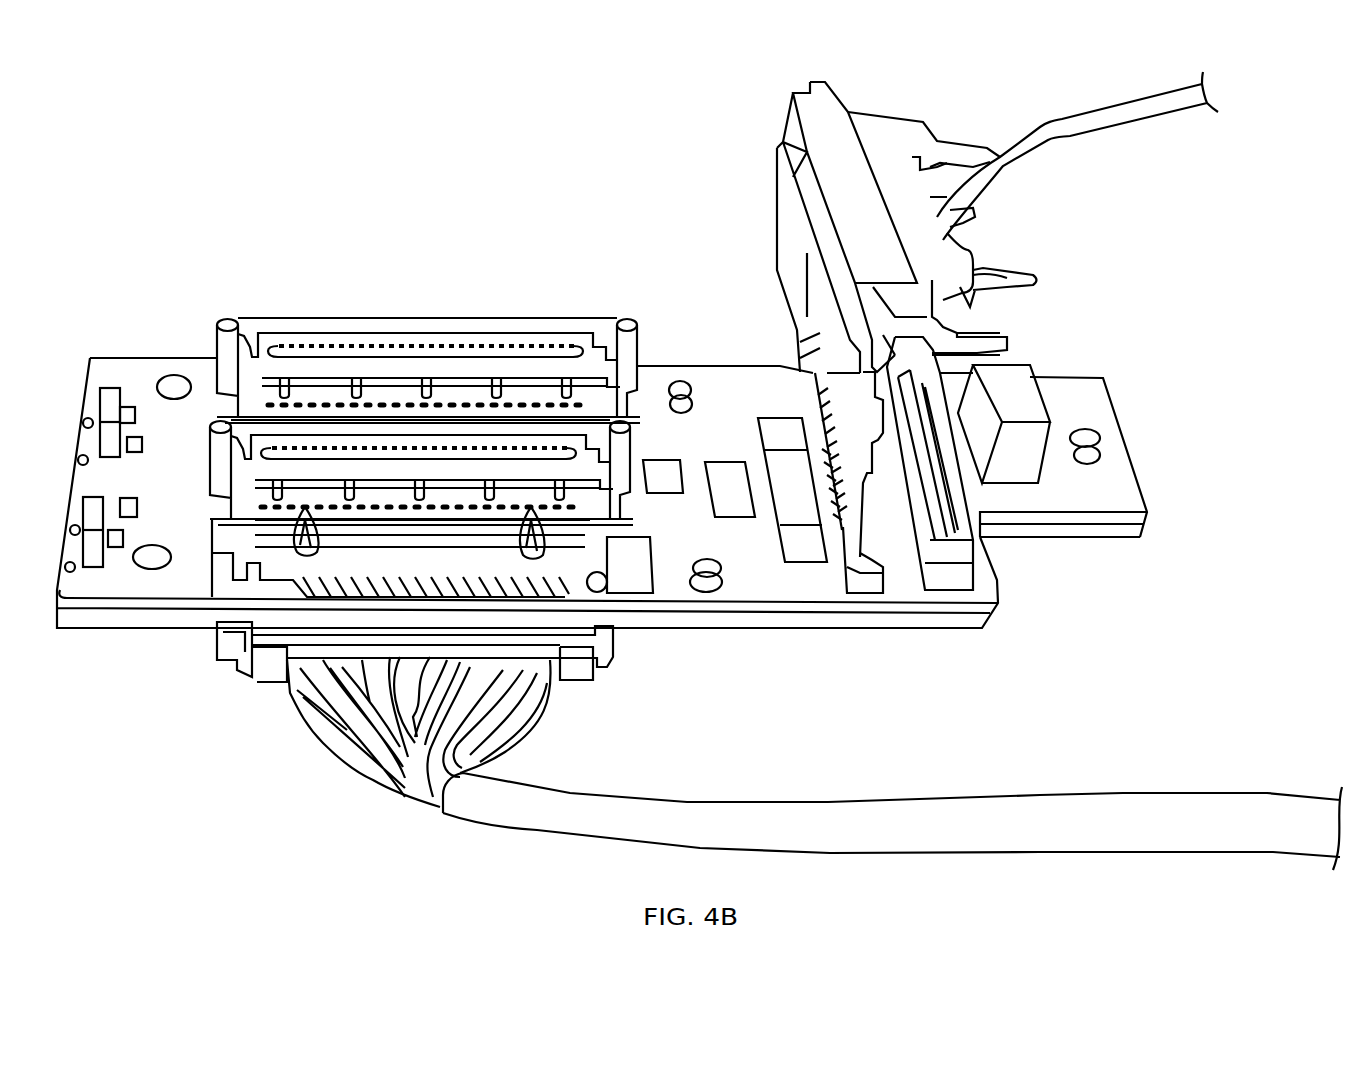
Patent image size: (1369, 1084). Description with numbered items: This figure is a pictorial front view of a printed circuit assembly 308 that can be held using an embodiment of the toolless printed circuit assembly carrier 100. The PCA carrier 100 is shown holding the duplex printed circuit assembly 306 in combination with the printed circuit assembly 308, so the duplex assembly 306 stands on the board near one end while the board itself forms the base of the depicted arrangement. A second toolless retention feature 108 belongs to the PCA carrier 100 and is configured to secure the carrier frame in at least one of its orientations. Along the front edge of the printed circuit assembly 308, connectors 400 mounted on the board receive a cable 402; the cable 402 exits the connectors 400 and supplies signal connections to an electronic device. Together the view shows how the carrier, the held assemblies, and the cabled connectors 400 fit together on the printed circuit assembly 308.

The printed circuit assembly carrier 100 is at (967, 247).
The second toolless retention feature 108 is at (1017, 287).
The duplex printed circuit assembly 306 is at (787, 245).
The printed circuit assembly 308 is at (773, 610).
The connectors 400 is at (580, 658).
The cable 402 is at (683, 810).